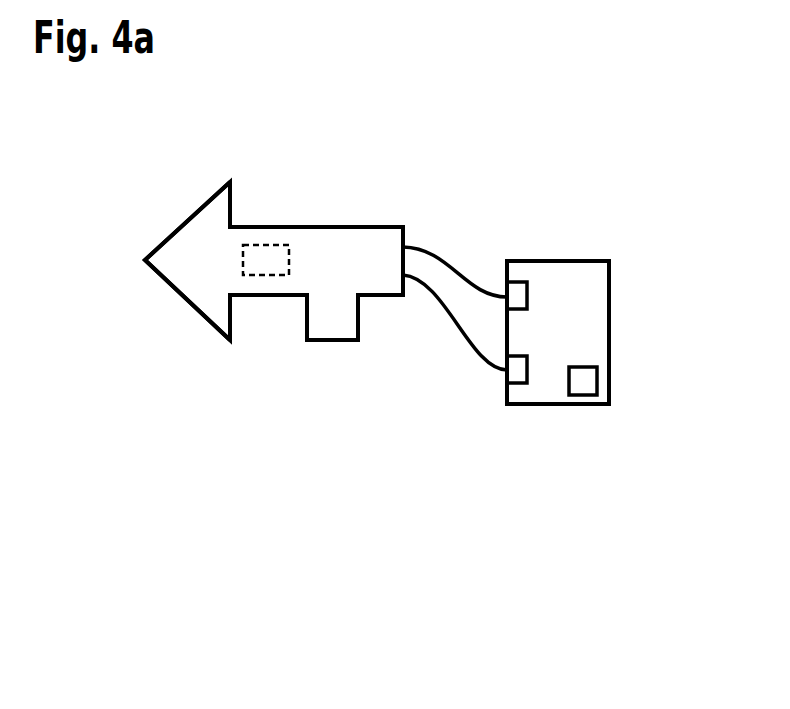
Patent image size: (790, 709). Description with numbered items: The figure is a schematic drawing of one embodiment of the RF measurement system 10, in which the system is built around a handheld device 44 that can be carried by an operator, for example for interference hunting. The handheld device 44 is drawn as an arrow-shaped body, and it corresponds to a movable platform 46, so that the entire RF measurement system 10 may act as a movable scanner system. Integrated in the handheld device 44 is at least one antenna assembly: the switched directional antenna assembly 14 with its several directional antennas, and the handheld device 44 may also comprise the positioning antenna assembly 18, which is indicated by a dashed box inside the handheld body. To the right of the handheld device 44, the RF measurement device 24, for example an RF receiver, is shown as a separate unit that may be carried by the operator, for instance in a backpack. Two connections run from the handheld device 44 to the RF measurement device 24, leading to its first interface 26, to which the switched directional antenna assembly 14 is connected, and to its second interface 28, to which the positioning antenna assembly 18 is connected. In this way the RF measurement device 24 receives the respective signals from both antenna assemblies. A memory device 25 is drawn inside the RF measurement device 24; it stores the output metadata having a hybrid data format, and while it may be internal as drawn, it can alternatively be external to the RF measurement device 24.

The RF measurement system 10 is at (317, 178).
The switched directional antenna assembly 14 is at (168, 222).
The movable platform 46 is at (382, 188).
The positioning antenna assembly 18 is at (263, 275).
The handheld device 44 is at (383, 295).
The RF measurement device 24 is at (609, 308).
The second interface 28 is at (520, 272).
The first interface 26 is at (517, 386).
The memory device 25 is at (597, 382).